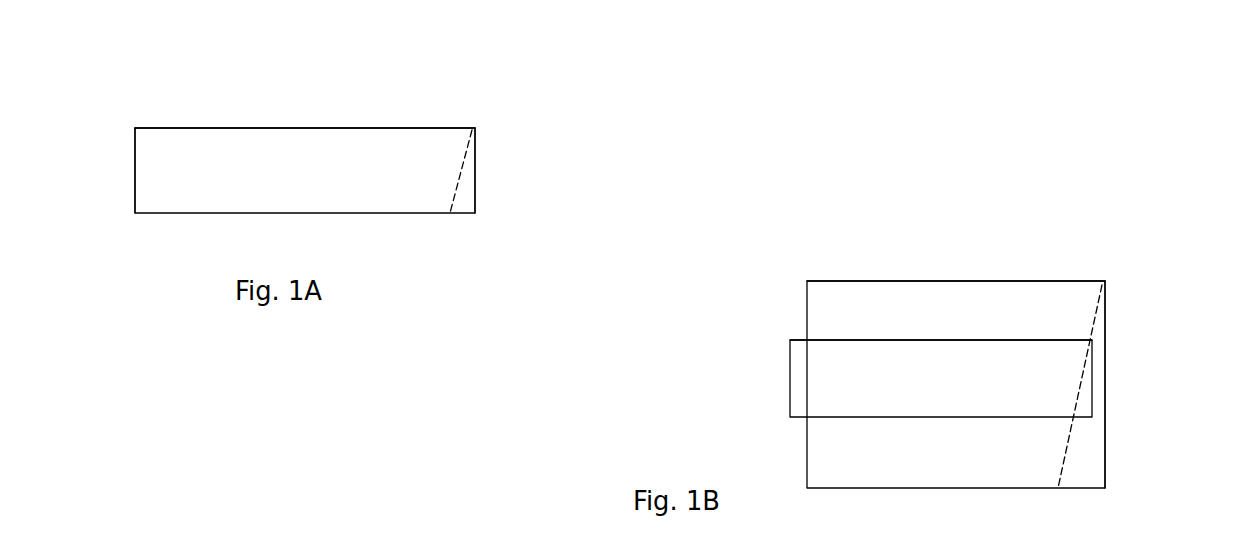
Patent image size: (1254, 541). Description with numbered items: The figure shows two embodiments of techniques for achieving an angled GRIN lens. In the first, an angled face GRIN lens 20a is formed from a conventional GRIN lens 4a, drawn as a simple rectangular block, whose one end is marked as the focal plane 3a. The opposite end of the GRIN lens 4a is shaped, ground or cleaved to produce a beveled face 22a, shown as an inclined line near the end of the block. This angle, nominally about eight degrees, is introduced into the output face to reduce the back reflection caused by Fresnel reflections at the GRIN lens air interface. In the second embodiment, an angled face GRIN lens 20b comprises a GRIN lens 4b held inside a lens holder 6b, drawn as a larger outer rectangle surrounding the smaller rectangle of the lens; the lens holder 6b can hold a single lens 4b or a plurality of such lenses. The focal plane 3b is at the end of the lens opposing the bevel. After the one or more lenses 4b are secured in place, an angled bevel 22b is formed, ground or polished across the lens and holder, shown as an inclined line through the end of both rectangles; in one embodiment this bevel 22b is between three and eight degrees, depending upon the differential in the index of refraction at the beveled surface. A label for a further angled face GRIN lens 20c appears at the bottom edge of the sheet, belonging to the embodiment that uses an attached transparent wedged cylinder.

In FIG. 1A, the angled face GRIN lens 20a is at (482, 97).
In FIG. 1A, the focal plane 3a is at (135, 156).
In FIG. 1A, the GRIN lens 4a is at (285, 155).
In FIG. 1A, the beveled face 22a is at (462, 178).
In FIG. 1B, the angled face GRIN lens 20b is at (1087, 265).
In FIG. 1B, the lens holder 6b is at (863, 306).
In FIG. 1B, the focal plane 3b is at (787, 356).
In FIG. 1B, the GRIN lens 4b is at (845, 394).
In FIG. 1B, the angled bevel 22b is at (1082, 387).
In FIG. 1B, the angled face GRIN lens 20c is at (483, 540).